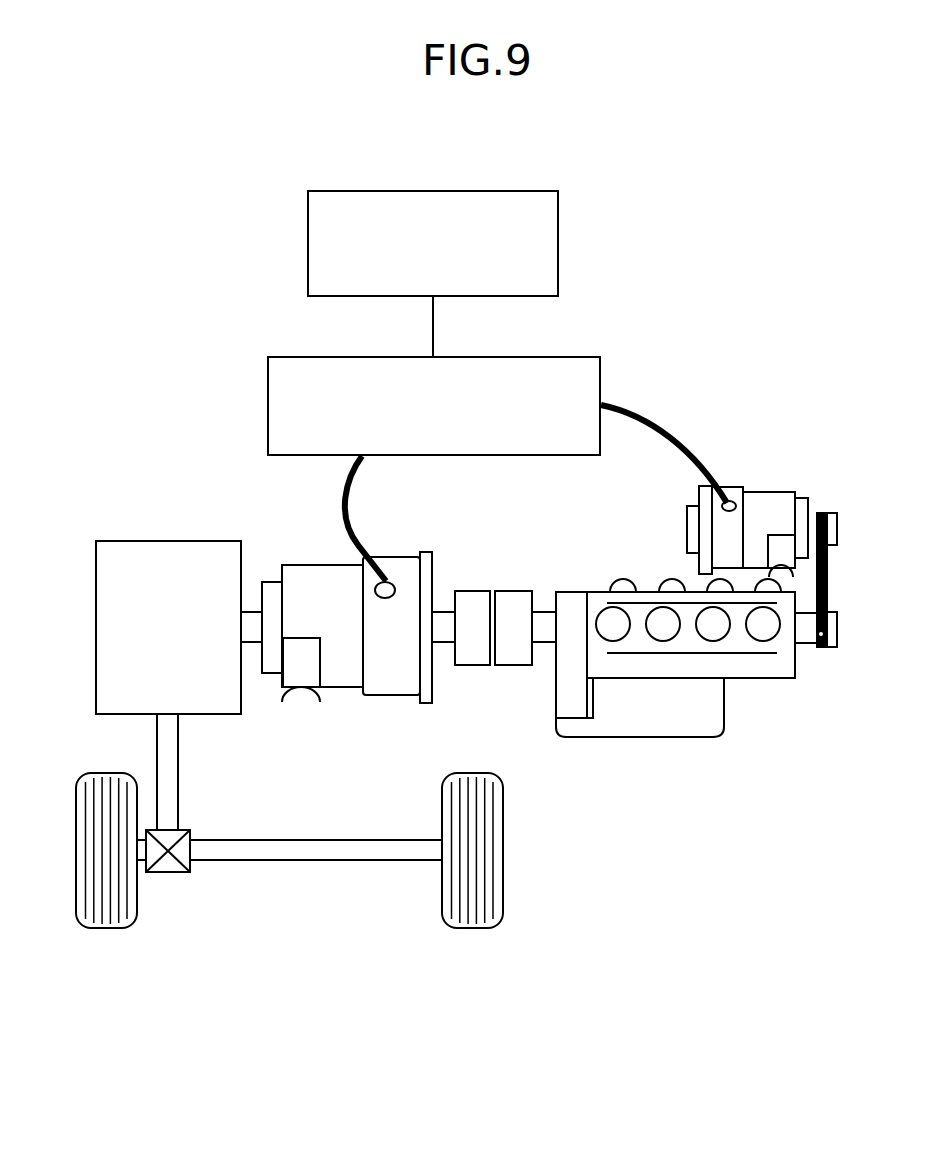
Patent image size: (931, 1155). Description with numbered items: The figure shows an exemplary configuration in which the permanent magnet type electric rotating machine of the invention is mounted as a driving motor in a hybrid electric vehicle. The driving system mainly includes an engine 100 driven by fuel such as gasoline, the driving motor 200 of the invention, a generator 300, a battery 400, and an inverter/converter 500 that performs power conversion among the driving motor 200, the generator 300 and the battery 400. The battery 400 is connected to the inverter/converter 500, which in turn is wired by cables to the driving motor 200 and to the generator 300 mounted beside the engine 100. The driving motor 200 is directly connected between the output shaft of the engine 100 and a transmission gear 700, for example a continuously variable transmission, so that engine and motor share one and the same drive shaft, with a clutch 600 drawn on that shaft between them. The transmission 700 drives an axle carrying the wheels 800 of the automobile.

The engine 100 is at (610, 665).
The driving motor 200 is at (397, 687).
The generator 300 is at (772, 492).
The battery 400 is at (528, 191).
The inverter/converter 500 is at (594, 357).
The clutch 600 is at (510, 628).
The transmission (CVT) 700 is at (170, 541).
The wheel 800 is at (111, 928).